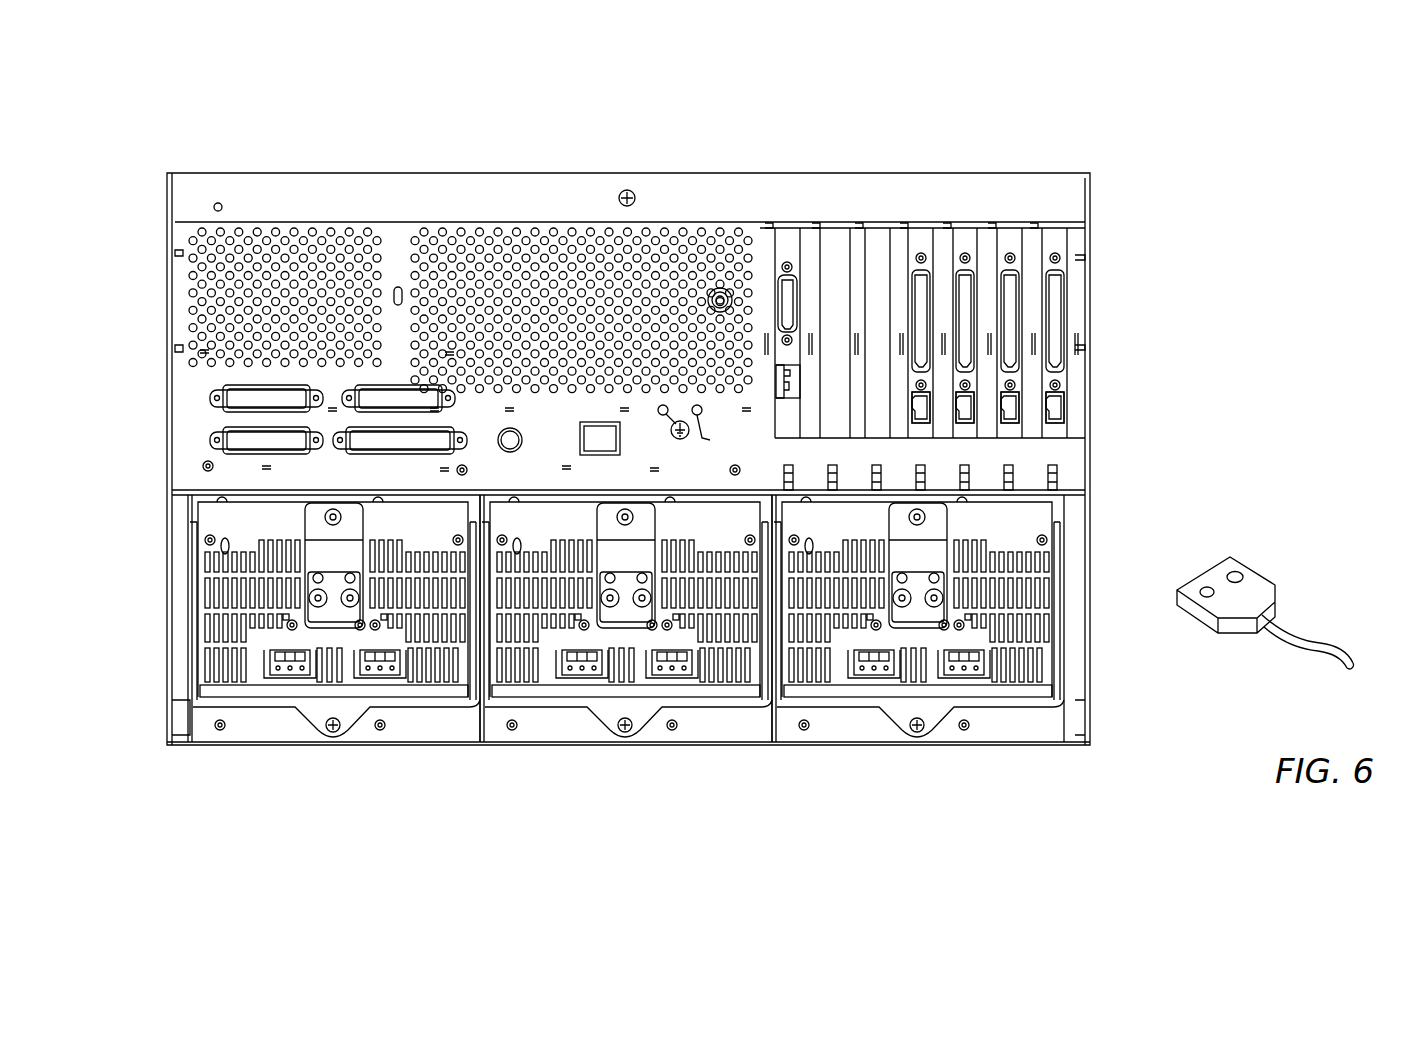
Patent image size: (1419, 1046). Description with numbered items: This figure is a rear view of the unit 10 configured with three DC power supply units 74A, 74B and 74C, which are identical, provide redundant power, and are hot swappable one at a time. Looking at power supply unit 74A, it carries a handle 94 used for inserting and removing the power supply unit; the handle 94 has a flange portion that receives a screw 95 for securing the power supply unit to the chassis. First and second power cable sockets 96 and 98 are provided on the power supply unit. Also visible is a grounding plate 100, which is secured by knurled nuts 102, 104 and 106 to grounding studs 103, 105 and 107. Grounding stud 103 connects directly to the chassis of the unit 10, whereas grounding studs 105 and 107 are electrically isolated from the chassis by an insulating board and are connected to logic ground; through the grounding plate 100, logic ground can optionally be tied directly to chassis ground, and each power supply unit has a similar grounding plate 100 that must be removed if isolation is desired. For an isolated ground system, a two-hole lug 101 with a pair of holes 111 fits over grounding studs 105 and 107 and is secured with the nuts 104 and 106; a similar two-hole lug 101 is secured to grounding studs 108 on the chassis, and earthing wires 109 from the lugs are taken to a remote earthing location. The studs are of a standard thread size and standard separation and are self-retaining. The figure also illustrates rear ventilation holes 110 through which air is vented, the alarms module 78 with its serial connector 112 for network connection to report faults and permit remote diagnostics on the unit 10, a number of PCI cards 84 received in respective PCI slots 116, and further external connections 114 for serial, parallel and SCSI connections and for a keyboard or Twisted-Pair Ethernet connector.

The unit 10 is at (203, 146).
The rear ventilation holes 110 is at (480, 240).
The alarms module 78 is at (787, 235).
The serial connector 112 is at (793, 372).
The PCI cards 84 is at (1055, 233).
The external connections 114 is at (340, 442).
The grounding studs 108 is at (690, 437).
The PCI slots 116 is at (1052, 432).
The grounding plate 100 is at (315, 552).
The knurled nut 102 is at (333, 508).
The grounding stud 103 is at (342, 518).
The knurled nut 104 is at (318, 598).
The grounding stud 105 is at (350, 598).
The knurled nut 106 is at (350, 600).
The grounding stud 107 is at (318, 600).
The handle 94 is at (222, 690).
The first power cable socket 96 is at (287, 670).
The second power cable socket 98 is at (393, 672).
The screw 95 is at (333, 740).
The DC power supply unit 74A is at (285, 635).
The DC power supply unit 74B is at (665, 633).
The DC power supply unit 74C is at (960, 633).
The two-hole lug 101 is at (1258, 588).
The holes 111 is at (1205, 592).
The earthing wire 109 is at (1337, 646).